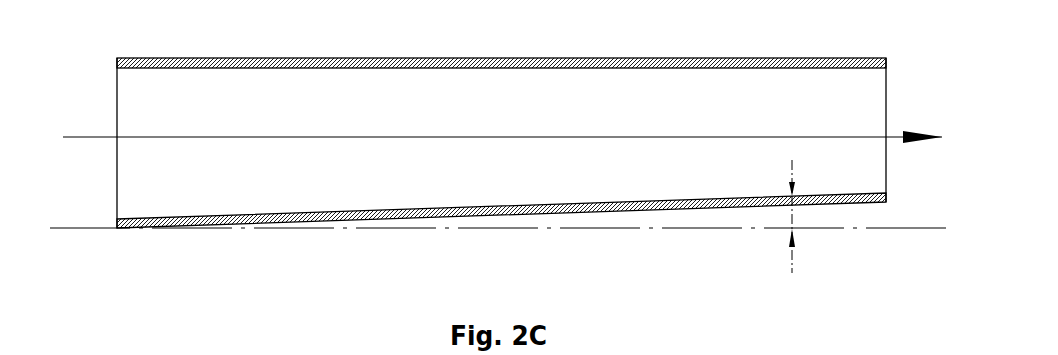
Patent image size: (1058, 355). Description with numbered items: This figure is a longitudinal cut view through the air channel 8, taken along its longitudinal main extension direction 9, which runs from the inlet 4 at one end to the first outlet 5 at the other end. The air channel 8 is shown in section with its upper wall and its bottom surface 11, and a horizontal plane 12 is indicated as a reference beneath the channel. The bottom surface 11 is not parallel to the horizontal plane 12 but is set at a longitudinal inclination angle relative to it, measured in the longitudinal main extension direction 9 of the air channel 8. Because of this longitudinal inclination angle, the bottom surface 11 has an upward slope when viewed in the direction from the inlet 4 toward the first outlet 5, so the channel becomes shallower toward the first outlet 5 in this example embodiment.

The inlet 4 is at (117, 112).
The first outlet 5 is at (888, 110).
The air channel 8 is at (376, 104).
The longitudinal main extension direction 9 is at (468, 138).
The bottom surface 11 is at (281, 193).
The horizontal plane 12 is at (683, 229).